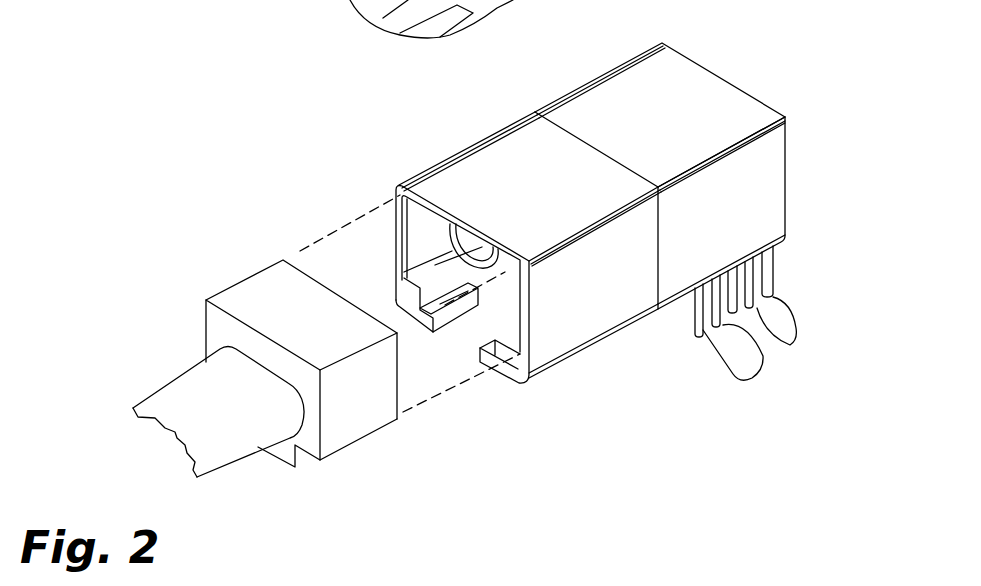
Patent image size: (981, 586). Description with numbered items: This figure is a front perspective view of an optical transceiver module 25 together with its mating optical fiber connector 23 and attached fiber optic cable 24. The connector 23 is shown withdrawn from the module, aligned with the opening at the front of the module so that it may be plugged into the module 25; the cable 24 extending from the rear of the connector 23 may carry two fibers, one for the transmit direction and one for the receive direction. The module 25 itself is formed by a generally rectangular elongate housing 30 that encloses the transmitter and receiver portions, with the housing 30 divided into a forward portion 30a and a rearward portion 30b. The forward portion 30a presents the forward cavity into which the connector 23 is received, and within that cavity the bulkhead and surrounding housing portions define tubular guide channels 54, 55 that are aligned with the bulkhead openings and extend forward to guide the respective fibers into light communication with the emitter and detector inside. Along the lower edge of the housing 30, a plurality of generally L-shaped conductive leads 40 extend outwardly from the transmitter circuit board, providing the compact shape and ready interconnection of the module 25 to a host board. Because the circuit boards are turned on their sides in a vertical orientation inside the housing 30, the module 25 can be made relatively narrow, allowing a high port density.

The optical transceiver module 25 is at (545, 214).
The housing 30 is at (528, 217).
The forward portion 30a is at (466, 269).
The rearward portion 30b is at (641, 47).
The conductive leads 40 is at (756, 329).
The tubular guide channel 54 is at (516, 258).
The tubular guide channel 55 is at (397, 273).
The optical fiber connector 23 is at (357, 403).
The fiber optic cable 24 is at (187, 400).